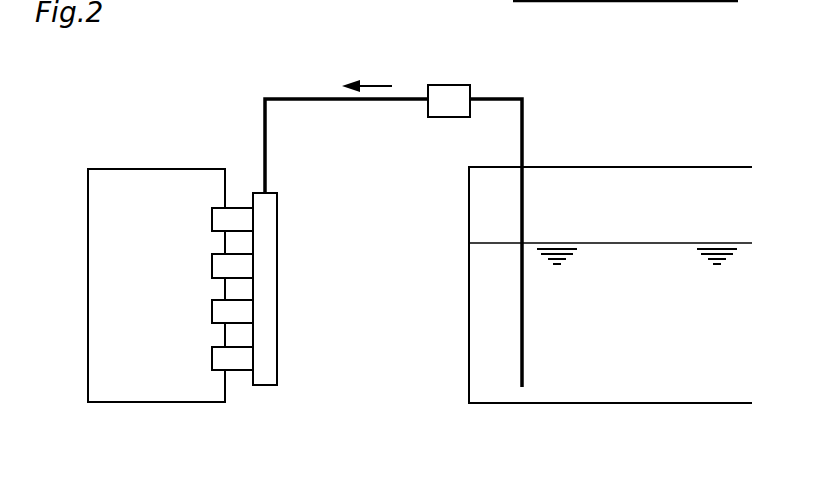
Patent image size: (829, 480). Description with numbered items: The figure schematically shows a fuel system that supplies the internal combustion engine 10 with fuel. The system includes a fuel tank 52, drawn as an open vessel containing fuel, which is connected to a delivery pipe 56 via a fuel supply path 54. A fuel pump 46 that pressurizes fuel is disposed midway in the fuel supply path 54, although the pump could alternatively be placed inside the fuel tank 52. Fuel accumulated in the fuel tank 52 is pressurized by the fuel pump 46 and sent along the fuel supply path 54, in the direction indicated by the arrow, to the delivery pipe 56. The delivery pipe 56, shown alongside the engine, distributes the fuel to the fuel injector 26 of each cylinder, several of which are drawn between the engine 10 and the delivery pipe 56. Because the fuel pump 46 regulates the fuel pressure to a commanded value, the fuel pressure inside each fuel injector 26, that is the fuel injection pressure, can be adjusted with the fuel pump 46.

The internal combustion engine 10 is at (143, 169).
The fuel injector 26 is at (235, 206).
The delivery pipe 56 is at (278, 277).
The fuel supply path 54 is at (290, 98).
The fuel pump 46 is at (438, 85).
The fuel tank 52 is at (683, 166).